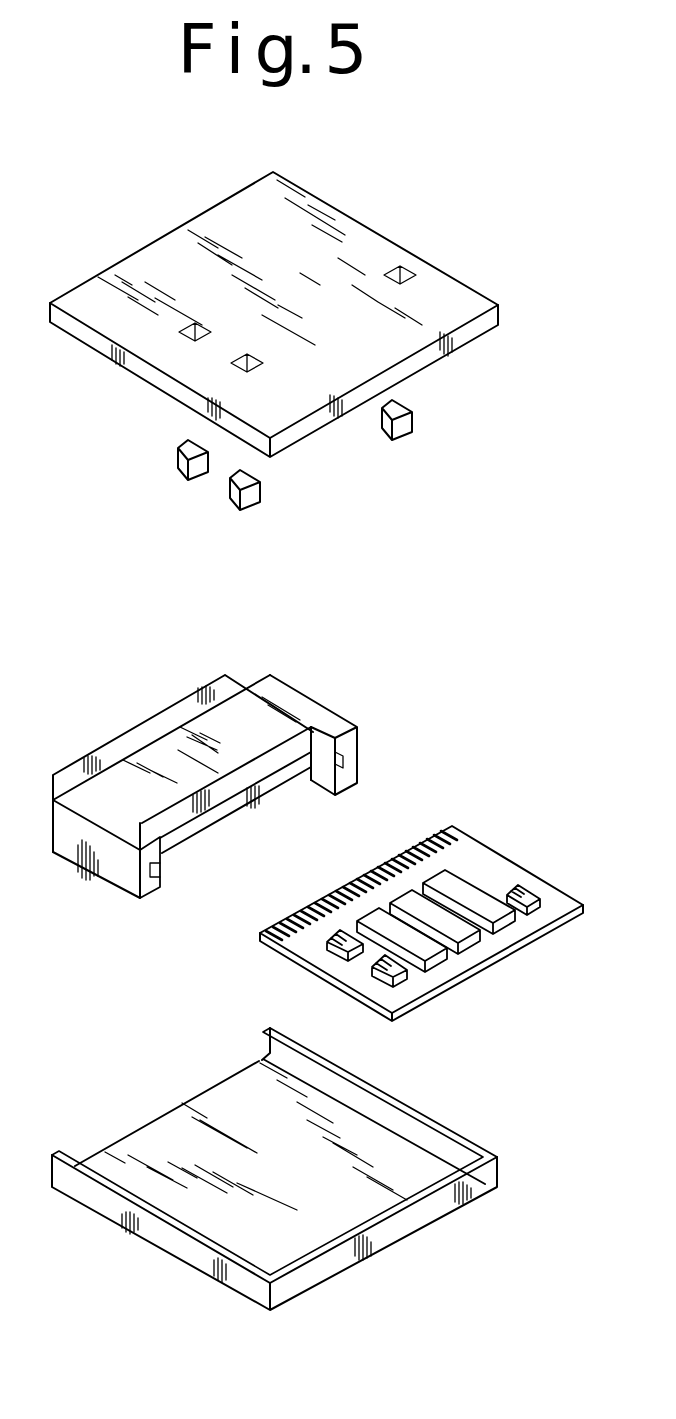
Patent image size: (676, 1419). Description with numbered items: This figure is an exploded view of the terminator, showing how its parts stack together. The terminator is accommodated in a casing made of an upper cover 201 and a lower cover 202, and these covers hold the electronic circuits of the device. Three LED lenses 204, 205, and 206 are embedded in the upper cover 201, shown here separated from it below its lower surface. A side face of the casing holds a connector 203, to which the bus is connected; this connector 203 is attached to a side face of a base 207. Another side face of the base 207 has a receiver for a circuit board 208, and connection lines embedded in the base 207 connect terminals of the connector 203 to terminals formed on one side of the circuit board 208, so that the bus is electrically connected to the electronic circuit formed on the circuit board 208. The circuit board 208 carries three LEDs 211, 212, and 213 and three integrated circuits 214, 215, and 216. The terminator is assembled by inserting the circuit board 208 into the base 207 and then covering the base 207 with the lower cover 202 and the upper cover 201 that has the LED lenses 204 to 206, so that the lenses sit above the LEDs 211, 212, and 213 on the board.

The upper cover 201 is at (380, 242).
The lower cover 202 is at (500, 1170).
The connector 203 is at (239, 765).
The LED lens 204 is at (407, 417).
The LED lens 205 is at (185, 473).
The LED lens 206 is at (237, 503).
The base 207 is at (317, 708).
The circuit board 208 is at (435, 933).
The LED 211 is at (523, 888).
The LED 212 is at (330, 952).
The LED 213 is at (377, 968).
The integrated circuit 214 is at (500, 914).
The integrated circuit 215 is at (460, 930).
The integrated circuit 216 is at (455, 952).